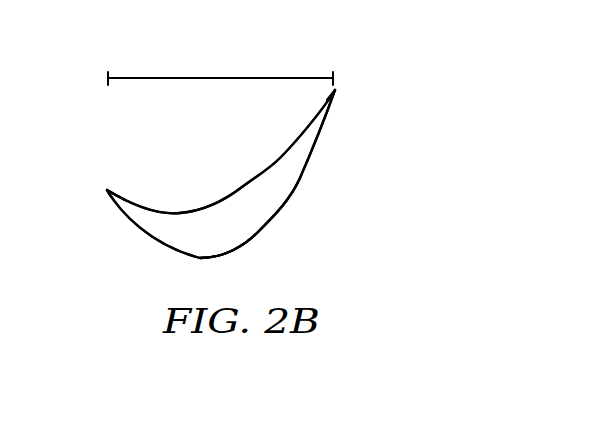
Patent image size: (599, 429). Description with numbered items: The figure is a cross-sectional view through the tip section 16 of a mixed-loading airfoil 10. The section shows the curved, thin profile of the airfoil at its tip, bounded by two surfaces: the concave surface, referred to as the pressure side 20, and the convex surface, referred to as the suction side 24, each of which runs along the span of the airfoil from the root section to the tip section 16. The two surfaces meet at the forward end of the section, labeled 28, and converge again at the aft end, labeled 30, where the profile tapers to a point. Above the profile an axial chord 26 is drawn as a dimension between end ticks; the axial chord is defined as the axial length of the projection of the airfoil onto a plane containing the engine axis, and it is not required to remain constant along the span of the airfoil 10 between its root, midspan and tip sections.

The mixed-loading airfoil 10 is at (372, 108).
The tip section 16 is at (257, 233).
The pressure side 20 is at (241, 187).
The suction side 24 is at (312, 150).
The axial chord 26 is at (163, 78).
The leading edge 28 is at (105, 191).
The trailing edge 30 is at (337, 88).